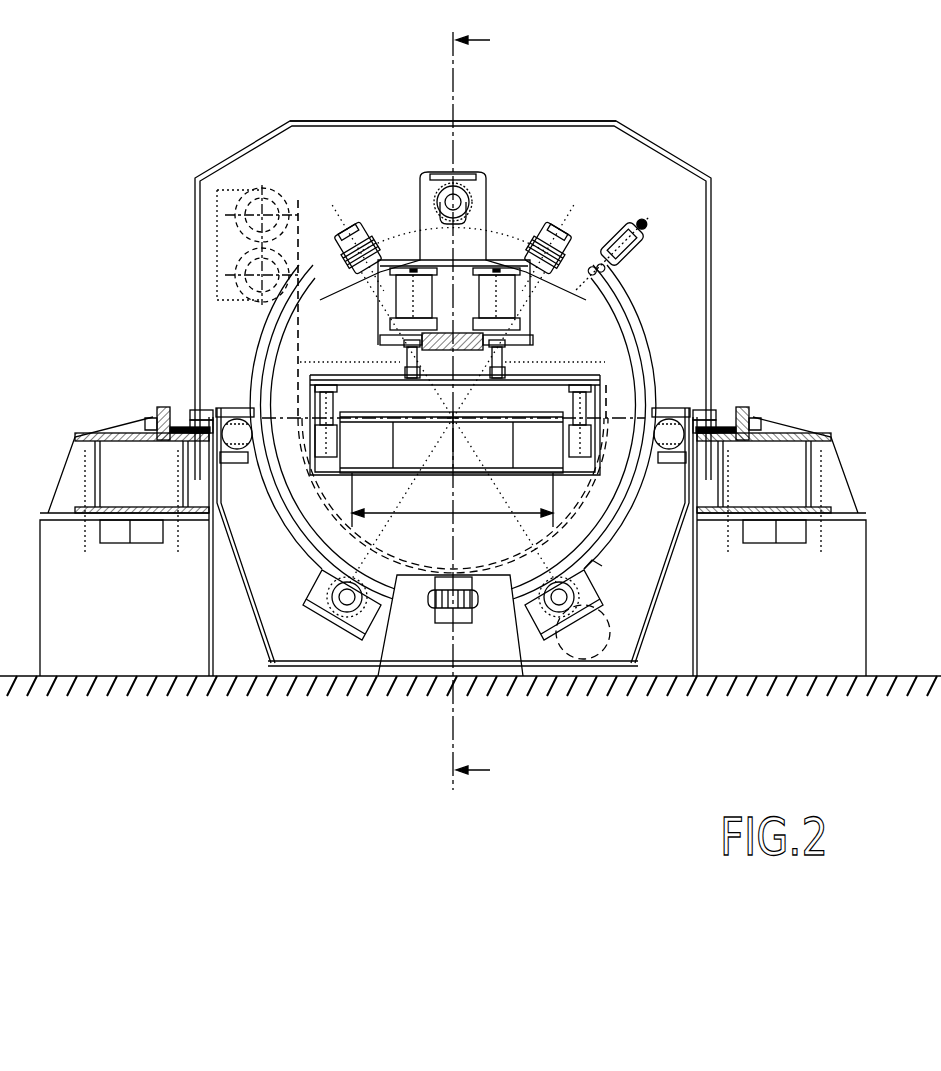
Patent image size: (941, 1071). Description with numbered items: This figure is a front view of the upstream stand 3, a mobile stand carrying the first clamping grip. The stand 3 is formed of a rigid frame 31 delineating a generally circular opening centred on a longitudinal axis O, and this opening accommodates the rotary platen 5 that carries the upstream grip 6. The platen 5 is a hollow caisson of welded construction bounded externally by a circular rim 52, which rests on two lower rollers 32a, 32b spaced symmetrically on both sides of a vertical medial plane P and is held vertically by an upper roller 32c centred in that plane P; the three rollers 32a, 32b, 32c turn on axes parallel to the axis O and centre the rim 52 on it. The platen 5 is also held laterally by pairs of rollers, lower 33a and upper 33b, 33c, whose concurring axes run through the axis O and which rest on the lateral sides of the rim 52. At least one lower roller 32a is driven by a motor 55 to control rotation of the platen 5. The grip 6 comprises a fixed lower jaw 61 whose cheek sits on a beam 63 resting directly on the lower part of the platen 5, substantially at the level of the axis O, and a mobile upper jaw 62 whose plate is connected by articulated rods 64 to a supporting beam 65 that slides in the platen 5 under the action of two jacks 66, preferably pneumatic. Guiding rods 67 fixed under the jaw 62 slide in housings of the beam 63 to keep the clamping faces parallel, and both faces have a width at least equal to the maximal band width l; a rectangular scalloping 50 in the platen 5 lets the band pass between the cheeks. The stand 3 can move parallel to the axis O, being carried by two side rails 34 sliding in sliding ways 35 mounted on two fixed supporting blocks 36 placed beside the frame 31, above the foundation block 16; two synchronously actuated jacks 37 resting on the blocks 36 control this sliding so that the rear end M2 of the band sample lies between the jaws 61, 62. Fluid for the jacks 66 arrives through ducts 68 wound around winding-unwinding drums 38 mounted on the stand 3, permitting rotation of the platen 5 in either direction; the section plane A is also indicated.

The upstream stand 3 is at (617, 178).
The rotary platen 5 is at (394, 391).
The upstream grip 6 is at (378, 388).
The foundation block 16 is at (218, 680).
The rigid frame 31 is at (680, 203).
The lower roller 32a is at (690, 635).
The lower roller 32b is at (318, 612).
The upper roller 32c is at (478, 210).
The lower roller 33a is at (437, 613).
The upper roller 33b is at (390, 250).
The upper roller 33c is at (541, 234).
The side rail 34 is at (190, 415).
The sliding way 35 is at (160, 412).
The supporting block 36 is at (123, 655).
The jack 37 is at (237, 418).
The winding-unwinding drum 38 is at (253, 207).
The rectangular scalloping 50 is at (603, 400).
The circular rim 52 is at (600, 585).
The motor 55 is at (610, 660).
The fixed lower jaw 61 is at (585, 437).
The mobile upper jaw 62 is at (560, 377).
The beam 63 is at (533, 455).
The articulated rod 64 is at (503, 353).
The supporting beam 65 is at (520, 335).
The jack 66 is at (500, 293).
The guiding rod 67 is at (320, 410).
The duct 68 is at (297, 240).
The section line A is at (486, 405).
The vertical medial plane P is at (458, 116).
The longitudinal axis O is at (451, 410).
The maximal width l is at (468, 492).
The rear end M2 is at (340, 347).